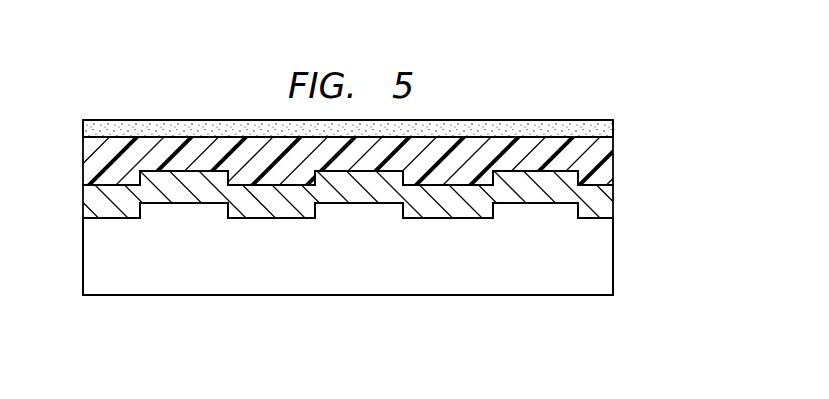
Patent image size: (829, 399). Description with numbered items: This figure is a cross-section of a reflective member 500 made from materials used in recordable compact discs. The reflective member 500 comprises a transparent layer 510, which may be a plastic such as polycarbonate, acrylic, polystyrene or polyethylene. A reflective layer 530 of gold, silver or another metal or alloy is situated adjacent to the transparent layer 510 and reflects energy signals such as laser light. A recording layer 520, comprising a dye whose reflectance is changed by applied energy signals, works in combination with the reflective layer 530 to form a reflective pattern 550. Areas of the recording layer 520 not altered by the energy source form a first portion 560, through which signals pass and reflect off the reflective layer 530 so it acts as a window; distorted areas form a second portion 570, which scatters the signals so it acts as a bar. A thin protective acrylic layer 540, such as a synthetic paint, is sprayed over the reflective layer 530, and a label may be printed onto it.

The reflective member 500 is at (128, 74).
The transparent layer 510 is at (175, 296).
The recording layer 520 is at (265, 219).
The reflective layer 530 is at (88, 174).
The top stippled layer 540 is at (537, 122).
The reflective pattern 550 is at (625, 123).
The first portion 560 is at (434, 222).
The second portion 570 is at (532, 208).